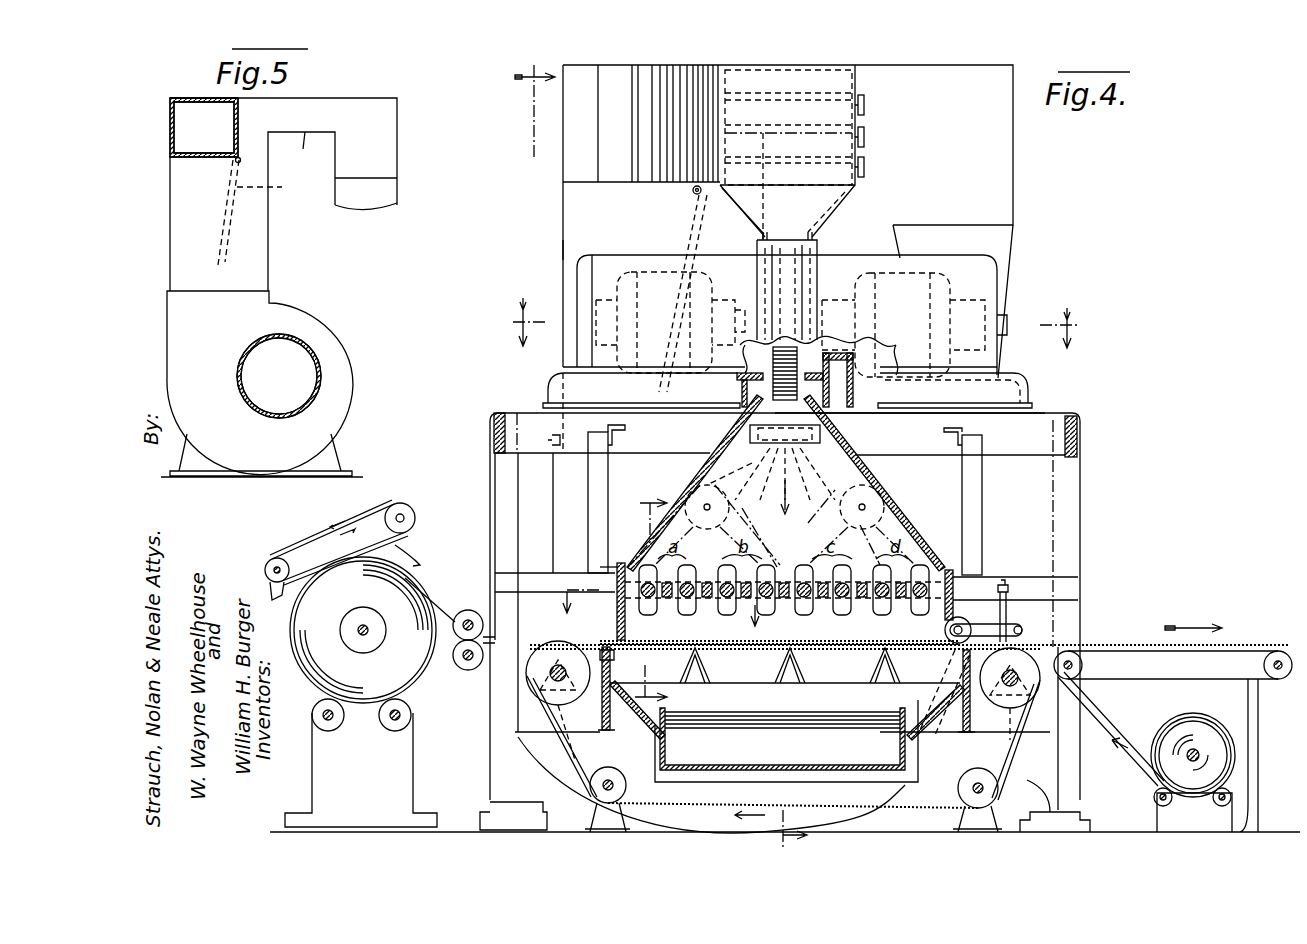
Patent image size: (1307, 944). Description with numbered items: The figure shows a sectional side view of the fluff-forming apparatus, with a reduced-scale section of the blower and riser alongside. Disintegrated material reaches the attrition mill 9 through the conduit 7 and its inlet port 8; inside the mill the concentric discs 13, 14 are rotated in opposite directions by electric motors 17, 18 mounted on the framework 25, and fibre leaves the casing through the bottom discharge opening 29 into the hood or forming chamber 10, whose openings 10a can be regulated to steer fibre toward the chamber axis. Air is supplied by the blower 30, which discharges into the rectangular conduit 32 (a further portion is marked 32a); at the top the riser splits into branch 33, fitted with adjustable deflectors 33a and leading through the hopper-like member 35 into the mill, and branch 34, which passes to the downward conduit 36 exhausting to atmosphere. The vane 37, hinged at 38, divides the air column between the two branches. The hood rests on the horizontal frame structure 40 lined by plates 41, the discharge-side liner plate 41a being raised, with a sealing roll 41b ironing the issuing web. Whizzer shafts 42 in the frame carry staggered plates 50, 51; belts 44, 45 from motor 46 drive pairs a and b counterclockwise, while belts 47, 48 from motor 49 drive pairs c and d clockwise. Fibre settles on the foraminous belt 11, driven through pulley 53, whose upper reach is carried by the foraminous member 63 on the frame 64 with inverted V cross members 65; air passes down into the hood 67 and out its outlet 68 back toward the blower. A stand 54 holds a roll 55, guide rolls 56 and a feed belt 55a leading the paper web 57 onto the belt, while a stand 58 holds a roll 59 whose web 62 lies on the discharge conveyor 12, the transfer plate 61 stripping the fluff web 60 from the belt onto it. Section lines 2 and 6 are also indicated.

In FIG. 4, the attrition mill 9 is at (818, 246).
In FIG. 4, the hood or forming chamber 10 is at (712, 447).
In FIG. 4, the openings in the forming chamber hood 10a is at (752, 463).
In FIG. 4, the foraminous conveyor belt 11 is at (580, 770).
In FIG. 4, the discharge conveyor 12 is at (1215, 690).
In FIG. 4, the disc of the attrition mill 13 is at (750, 432).
In FIG. 4, the disc of the attrition mill 14 is at (836, 432).
In FIG. 4, the electric motor 17 is at (641, 268).
In FIG. 4, the electric motor 18 is at (856, 276).
In FIG. 4, the framework 25 is at (1078, 446).
In FIG. 4, the bottom discharge opening 29 is at (760, 383).
In FIG. 5, the blower 30 is at (311, 317).
In FIG. 4, the blower 30 is at (832, 830).
In FIG. 5, the upwardly extending conduit 32 is at (269, 242).
In FIG. 4, the upwardly extending conduit 32 is at (563, 210).
In FIG. 5, the duct branch 32a is at (170, 228).
In FIG. 4, the duct branch 32a is at (563, 248).
In FIG. 5, the branch conduit 33 is at (170, 145).
In FIG. 4, the branch conduit 33 is at (563, 170).
In FIG. 4, the pivotally adjustable deflectors 33a is at (836, 110).
In FIG. 5, the branch conduit 34 is at (301, 149).
In FIG. 4, the branch conduit 34 is at (865, 148).
In FIG. 4, the hopper-like member 35 is at (756, 216).
In FIG. 5, the downwardly extending conduit 36 is at (397, 199).
In FIG. 4, the downwardly extending conduit 36 is at (1013, 240).
In FIG. 5, the adjustable vane or valve plate 37 is at (264, 212).
In FIG. 4, the adjustable vane or valve plate 37 is at (692, 228).
In FIG. 5, the hinge or pivot shaft 38 is at (240, 161).
In FIG. 4, the hinge or pivot shaft 38 is at (692, 191).
In FIG. 4, the horizontal rectangular frame structure 40 is at (962, 586).
In FIG. 4, the lining plates 41 is at (617, 628).
In FIG. 4, the liner plate at the discharge side 41a is at (987, 611).
In FIG. 4, the vertically adjustable sealing roll 41b is at (938, 695).
In FIG. 4, the shafts 42 is at (652, 605).
In FIG. 4, the belt 44 is at (656, 518).
In FIG. 4, the belt 45 is at (712, 530).
In FIG. 4, the electric motor 46 is at (700, 486).
In FIG. 4, the belt 47 is at (811, 523).
In FIG. 4, the belt 48 is at (925, 524).
In FIG. 4, the electric motor 49 is at (880, 490).
In FIG. 4, the plates or bars 50 is at (915, 612).
In FIG. 4, the plates or bars 51 is at (946, 625).
In FIG. 4, the conveyor pulley 53 is at (1002, 708).
In FIG. 4, the supporting stand 54 is at (413, 750).
In FIG. 4, the roll of paper 55 is at (330, 550).
In FIG. 4, the feed belt 55a is at (410, 540).
In FIG. 4, the guide rolls 56 is at (460, 658).
In FIG. 4, the paper web 57 is at (436, 600).
In FIG. 4, the stand 58 is at (1160, 810).
In FIG. 4, the roll of paper 59 is at (1222, 728).
In FIG. 4, the web of fluff 60 is at (1020, 644).
In FIG. 4, the transfer plate 61 is at (1045, 690).
In FIG. 4, the web 62 is at (1122, 718).
In FIG. 4, the foraminous member 63 is at (852, 652).
In FIG. 4, the rectangular frame 64 is at (608, 655).
In FIG. 4, the cross members 65 is at (778, 660).
In FIG. 4, the hood 67 is at (628, 733).
In FIG. 4, the outlet 68 is at (680, 766).
In FIG. 4, the section line 2 is at (654, 456).
In FIG. 4, the section line 6 is at (795, 323).
In FIG. 4, the conduit 7 is at (654, 592).
In FIG. 4, the inlet port 8 is at (660, 616).